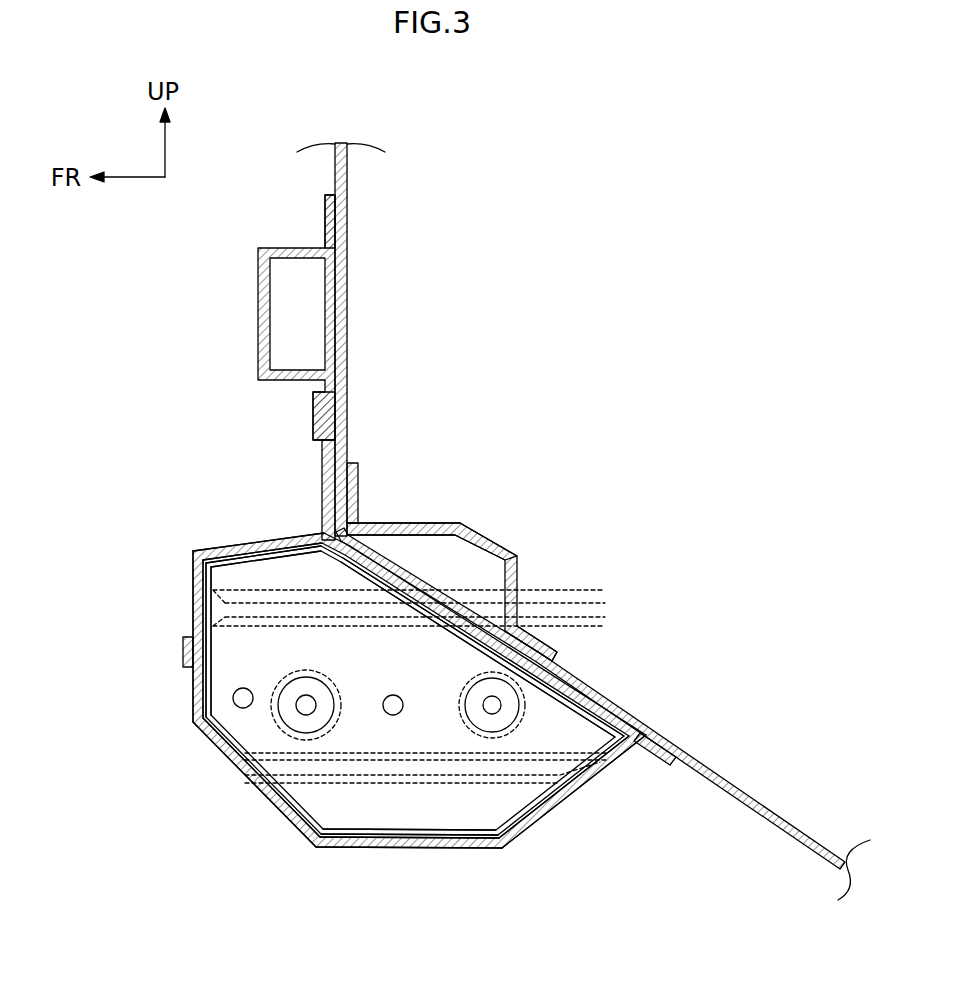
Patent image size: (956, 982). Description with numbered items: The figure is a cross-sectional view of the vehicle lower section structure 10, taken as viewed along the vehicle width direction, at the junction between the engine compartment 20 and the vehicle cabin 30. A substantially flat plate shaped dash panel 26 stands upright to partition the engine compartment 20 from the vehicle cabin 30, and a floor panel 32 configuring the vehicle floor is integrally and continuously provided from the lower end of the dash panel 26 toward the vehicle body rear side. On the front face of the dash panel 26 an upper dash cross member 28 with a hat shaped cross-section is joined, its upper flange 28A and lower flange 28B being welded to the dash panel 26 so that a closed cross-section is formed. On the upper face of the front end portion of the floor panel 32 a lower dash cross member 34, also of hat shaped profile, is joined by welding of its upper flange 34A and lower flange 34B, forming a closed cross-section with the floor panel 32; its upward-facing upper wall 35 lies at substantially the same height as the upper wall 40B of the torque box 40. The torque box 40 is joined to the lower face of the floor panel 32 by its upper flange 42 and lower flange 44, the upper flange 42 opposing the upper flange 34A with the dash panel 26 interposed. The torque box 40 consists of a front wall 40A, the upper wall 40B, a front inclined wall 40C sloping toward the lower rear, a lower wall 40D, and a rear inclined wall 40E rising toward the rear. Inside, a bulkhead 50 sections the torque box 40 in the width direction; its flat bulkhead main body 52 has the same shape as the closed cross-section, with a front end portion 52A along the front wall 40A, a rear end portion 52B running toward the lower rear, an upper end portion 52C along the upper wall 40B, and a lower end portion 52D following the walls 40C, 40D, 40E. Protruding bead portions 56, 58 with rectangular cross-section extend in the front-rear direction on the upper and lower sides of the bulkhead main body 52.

The vehicle lower section structure 10 is at (193, 853).
The engine compartment 20 is at (140, 385).
The dash panel 26 is at (348, 300).
The upper dash cross member 28 is at (262, 250).
The upper flange 28A is at (335, 185).
The lower flange 28B is at (347, 415).
The vehicle cabin 30 is at (612, 338).
The floor panel 32 is at (720, 778).
The lower dash cross member 34 is at (514, 555).
The upper flange 34A is at (358, 482).
The lower flange 34B is at (548, 652).
The upper wall 35 is at (430, 525).
The torque box 40 is at (290, 825).
The front wall 40A is at (195, 618).
The upper wall 40B is at (250, 537).
The front inclined wall 40C is at (215, 757).
The lower wall 40D is at (395, 848).
The rear inclined wall 40E is at (535, 815).
The upper flange 42 is at (318, 493).
The lower flange 44 is at (665, 775).
The bulkhead 50 is at (353, 790).
The bulkhead main body 52 is at (245, 680).
The front end portion 52A is at (205, 708).
The rear end portion 52B is at (620, 705).
The upper end portion 52C is at (215, 550).
The lower end portion 52D is at (462, 835).
The bead portion 56 is at (275, 603).
The bead portion 58 is at (530, 772).